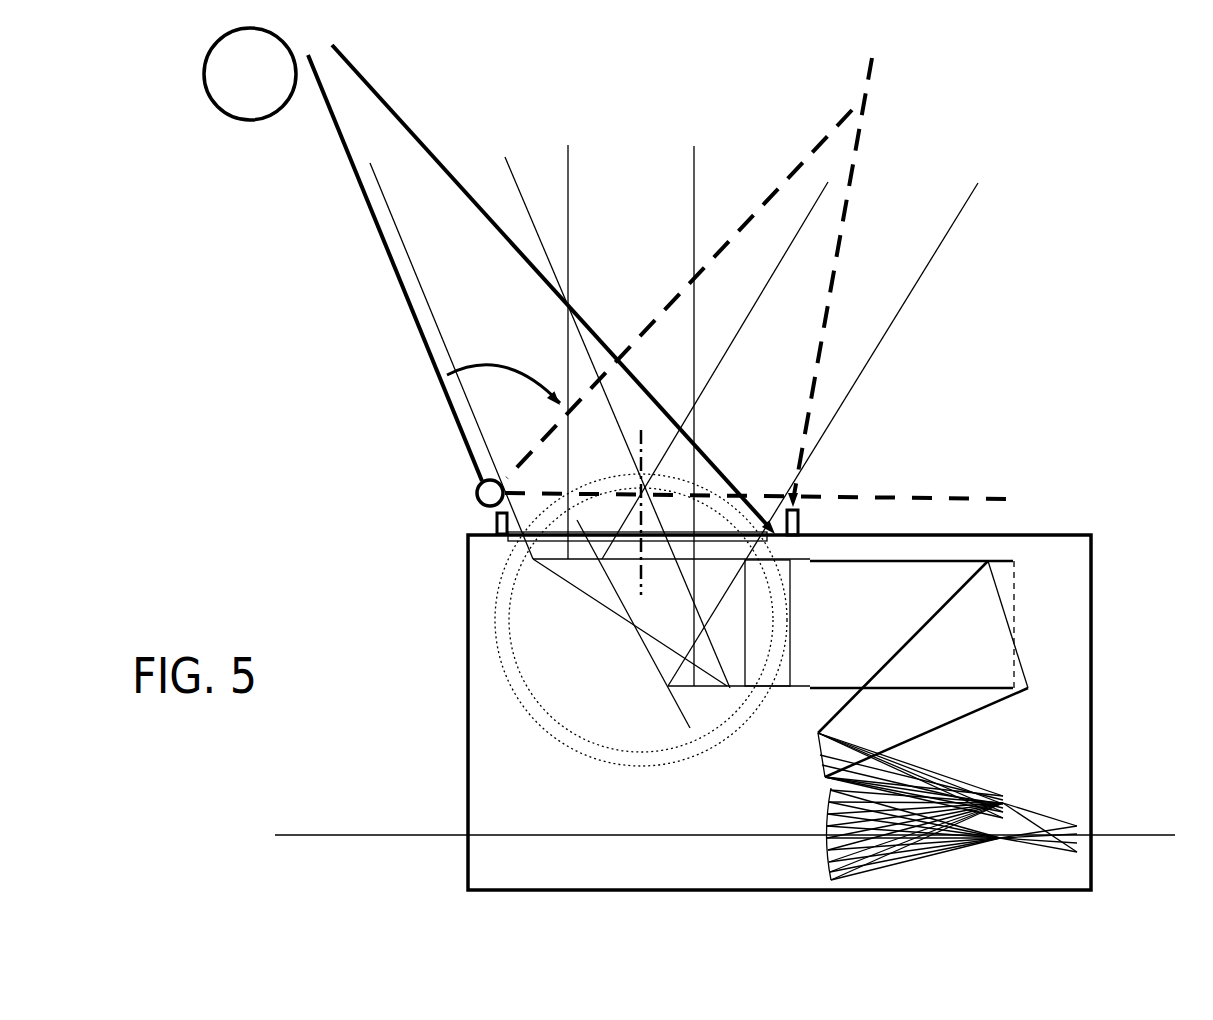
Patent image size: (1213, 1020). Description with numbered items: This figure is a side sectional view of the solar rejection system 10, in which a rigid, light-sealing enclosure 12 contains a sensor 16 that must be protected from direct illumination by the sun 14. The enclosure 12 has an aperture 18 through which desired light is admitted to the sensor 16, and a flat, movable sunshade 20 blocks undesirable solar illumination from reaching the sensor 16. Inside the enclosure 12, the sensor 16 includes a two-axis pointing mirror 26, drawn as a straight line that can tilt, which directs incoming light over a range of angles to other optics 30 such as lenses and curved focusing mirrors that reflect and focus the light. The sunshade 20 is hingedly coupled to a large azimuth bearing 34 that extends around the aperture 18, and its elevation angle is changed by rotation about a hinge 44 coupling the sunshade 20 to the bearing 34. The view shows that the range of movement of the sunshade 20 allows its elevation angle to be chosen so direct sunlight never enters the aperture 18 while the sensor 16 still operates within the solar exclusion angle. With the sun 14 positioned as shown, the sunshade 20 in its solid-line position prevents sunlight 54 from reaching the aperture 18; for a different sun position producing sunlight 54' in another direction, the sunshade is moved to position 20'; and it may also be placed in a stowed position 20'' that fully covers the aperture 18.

The solar rejection system 10 is at (963, 140).
The enclosure 12 is at (1055, 535).
The sun 14 is at (240, 95).
The sensor 16 is at (525, 761).
The aperture 18 is at (672, 512).
The sunshade 20 is at (397, 307).
The sunshade position 20' is at (679, 267).
The stowed position 20'' is at (758, 456).
The two-axis pointing mirror 26 is at (562, 582).
The other optics 30 is at (1062, 703).
The azimuth bearing 34 is at (497, 523).
The hinge 44 is at (477, 488).
The sunlight 54 is at (553, 366).
The sunlight in a different direction 54' is at (898, 281).